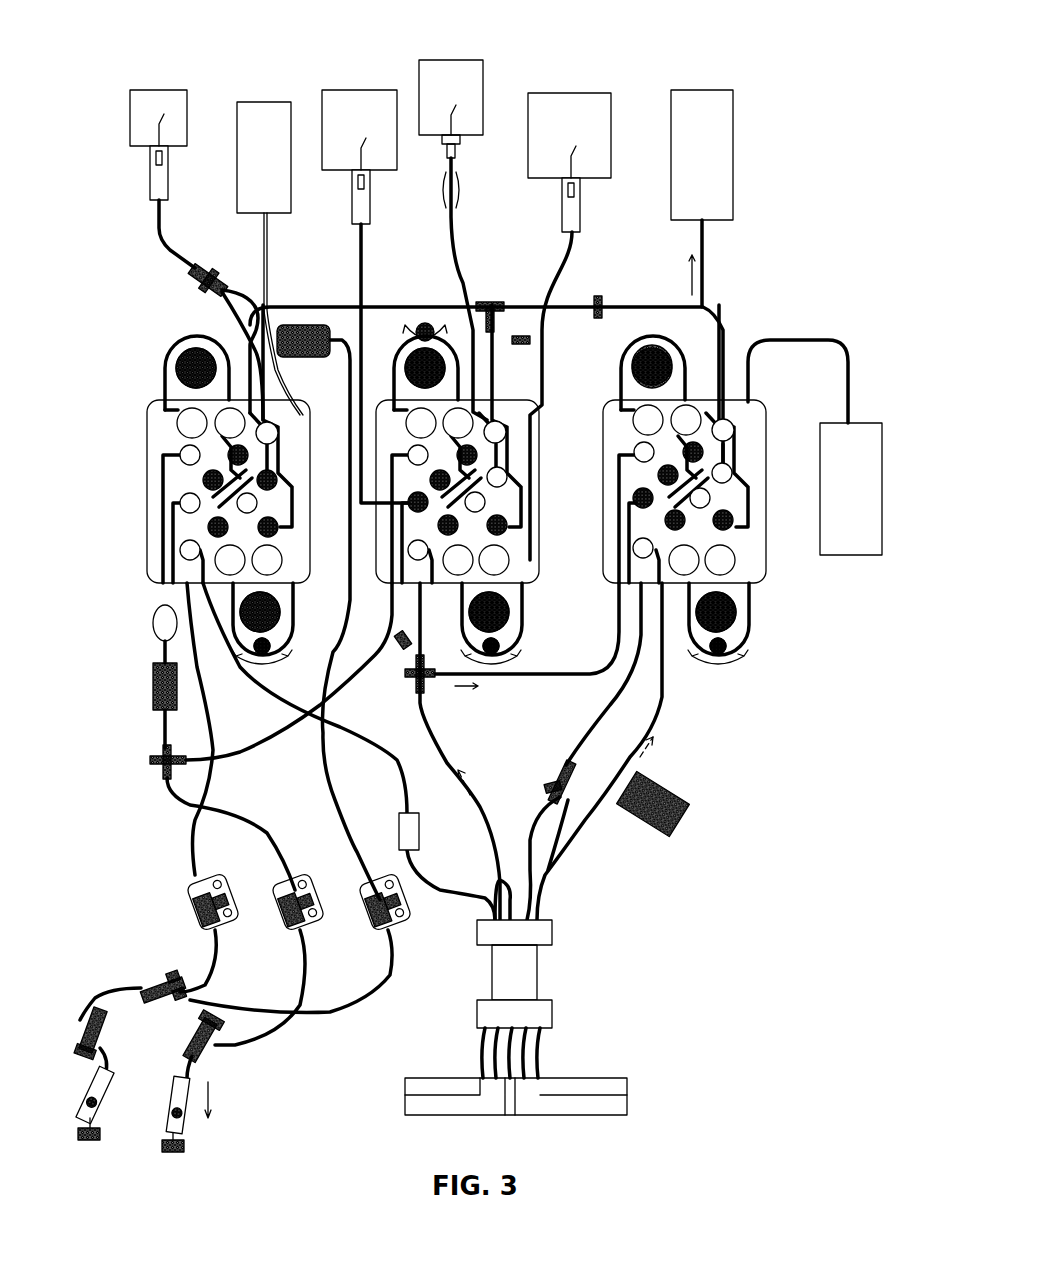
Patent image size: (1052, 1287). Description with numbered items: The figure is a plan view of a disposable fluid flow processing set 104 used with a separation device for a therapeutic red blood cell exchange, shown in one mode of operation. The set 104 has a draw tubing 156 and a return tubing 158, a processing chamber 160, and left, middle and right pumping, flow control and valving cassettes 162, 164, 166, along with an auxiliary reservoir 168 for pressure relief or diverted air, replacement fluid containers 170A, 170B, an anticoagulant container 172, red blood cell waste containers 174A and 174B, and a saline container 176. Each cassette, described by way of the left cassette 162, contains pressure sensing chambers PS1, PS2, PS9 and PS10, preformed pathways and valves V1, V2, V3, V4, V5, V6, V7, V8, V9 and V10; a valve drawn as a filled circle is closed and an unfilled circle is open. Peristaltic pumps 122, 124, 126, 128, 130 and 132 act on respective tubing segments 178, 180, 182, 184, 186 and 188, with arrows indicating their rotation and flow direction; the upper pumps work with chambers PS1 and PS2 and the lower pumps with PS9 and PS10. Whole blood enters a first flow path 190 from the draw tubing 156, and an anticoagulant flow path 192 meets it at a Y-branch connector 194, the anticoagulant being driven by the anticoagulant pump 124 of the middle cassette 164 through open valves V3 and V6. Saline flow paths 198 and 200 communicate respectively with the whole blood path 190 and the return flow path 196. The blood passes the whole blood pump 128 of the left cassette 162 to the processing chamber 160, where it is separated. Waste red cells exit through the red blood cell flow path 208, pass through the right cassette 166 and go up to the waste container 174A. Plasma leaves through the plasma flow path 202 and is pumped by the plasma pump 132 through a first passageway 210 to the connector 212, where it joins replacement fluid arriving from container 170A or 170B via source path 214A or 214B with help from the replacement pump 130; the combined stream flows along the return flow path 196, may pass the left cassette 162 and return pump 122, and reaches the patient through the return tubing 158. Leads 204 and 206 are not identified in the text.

The disposable fluid flow processing set 104 is at (809, 259).
The upper left pump 122 is at (178, 368).
The anticoagulant pump 124 is at (410, 348).
The upper pump 126 is at (640, 345).
The whole blood pump 128 is at (282, 620).
The replacement pump 130 is at (510, 612).
The plasma pump 132 is at (738, 610).
The draw tubing 156 is at (118, 1048).
The return tubing 158 is at (200, 1075).
The processing chamber 160 is at (630, 1095).
The left cassette 162 is at (300, 398).
The middle cassette 164 is at (530, 400).
The right cassette 166 is at (752, 380).
The auxiliary reservoir 168 is at (266, 102).
The replacement fluid container 170A is at (358, 90).
The replacement fluid container 170B is at (566, 93).
The anticoagulant container 172 is at (447, 60).
The red blood cell waste container 174A is at (700, 90).
The red blood cell waste container 174B is at (850, 423).
The saline container 176 is at (160, 90).
The tubing segment 178 is at (172, 345).
The tubing segment 180 is at (420, 325).
The tubing segment 182 is at (655, 335).
The tubing segment 184 is at (285, 650).
The tubing segment 186 is at (515, 648).
The tubing segment 188 is at (745, 648).
The first flow path 190 is at (445, 880).
The anticoagulant flow path 192 is at (455, 230).
The Y-branch connector 194 is at (155, 970).
The return flow path 196 is at (305, 968).
The saline flow path 198 is at (213, 317).
The saline flow path 200 is at (236, 290).
The plasma flow path 202 is at (590, 850).
The tubing 204 is at (545, 880).
The connector 206 is at (545, 910).
The red blood cell flow path 208 is at (470, 808).
The first passageway 210 is at (705, 300).
The connector 212 is at (490, 300).
The replacement fluid source path 214A is at (360, 268).
The replacement fluid source path 214B is at (575, 250).
The pressure sensing chamber PS1 is at (178, 420).
The pressure sensing chamber PS2 is at (215, 428).
The pressure sensing chamber PS9 is at (213, 565).
The pressure sensing chamber PS10 is at (160, 600).
The valve V1 is at (202, 482).
The valve V2 is at (250, 456).
The valve V3 is at (285, 428).
The valve V4 is at (280, 480).
The valve V5 is at (280, 530).
The valve V6 is at (178, 455).
The valve V7 is at (178, 503).
The valve V8 is at (178, 550).
The valve V9 is at (206, 527).
The valve V10 is at (235, 505).